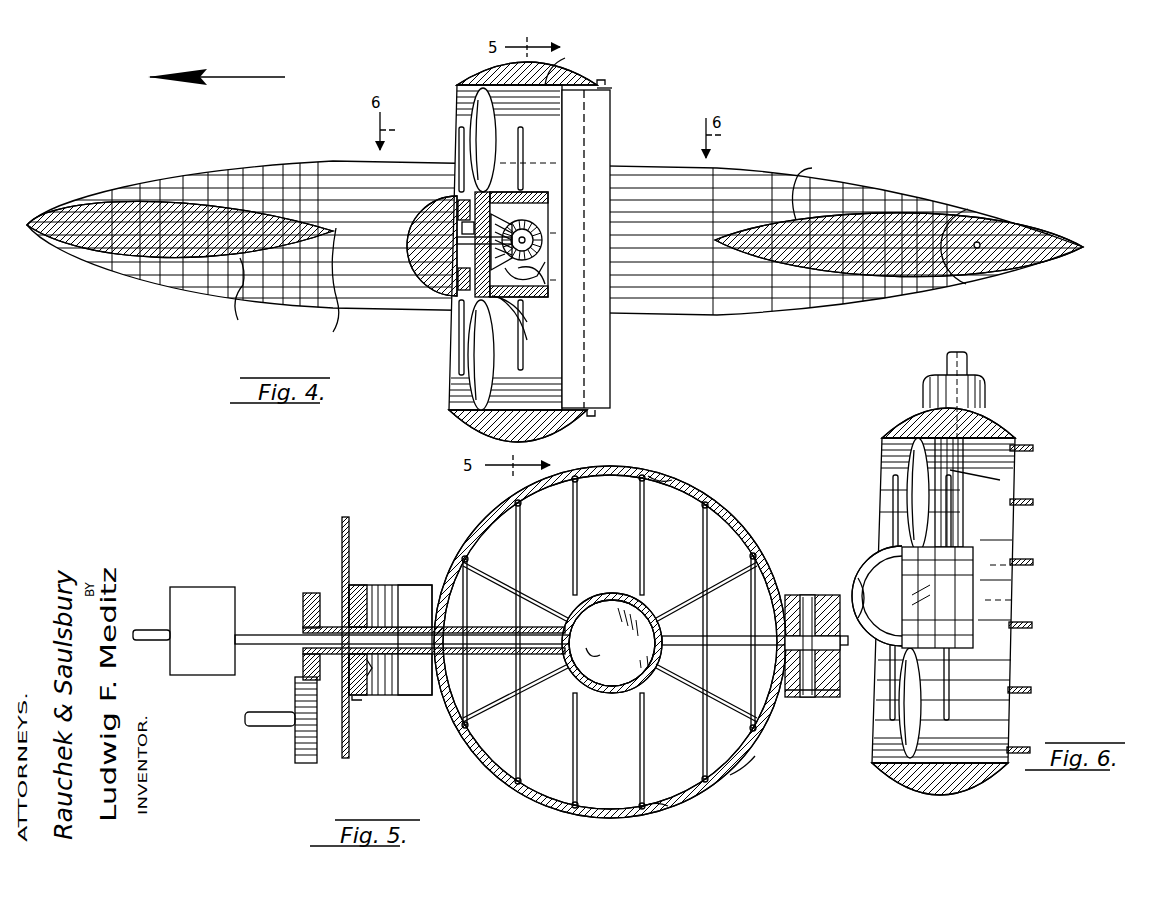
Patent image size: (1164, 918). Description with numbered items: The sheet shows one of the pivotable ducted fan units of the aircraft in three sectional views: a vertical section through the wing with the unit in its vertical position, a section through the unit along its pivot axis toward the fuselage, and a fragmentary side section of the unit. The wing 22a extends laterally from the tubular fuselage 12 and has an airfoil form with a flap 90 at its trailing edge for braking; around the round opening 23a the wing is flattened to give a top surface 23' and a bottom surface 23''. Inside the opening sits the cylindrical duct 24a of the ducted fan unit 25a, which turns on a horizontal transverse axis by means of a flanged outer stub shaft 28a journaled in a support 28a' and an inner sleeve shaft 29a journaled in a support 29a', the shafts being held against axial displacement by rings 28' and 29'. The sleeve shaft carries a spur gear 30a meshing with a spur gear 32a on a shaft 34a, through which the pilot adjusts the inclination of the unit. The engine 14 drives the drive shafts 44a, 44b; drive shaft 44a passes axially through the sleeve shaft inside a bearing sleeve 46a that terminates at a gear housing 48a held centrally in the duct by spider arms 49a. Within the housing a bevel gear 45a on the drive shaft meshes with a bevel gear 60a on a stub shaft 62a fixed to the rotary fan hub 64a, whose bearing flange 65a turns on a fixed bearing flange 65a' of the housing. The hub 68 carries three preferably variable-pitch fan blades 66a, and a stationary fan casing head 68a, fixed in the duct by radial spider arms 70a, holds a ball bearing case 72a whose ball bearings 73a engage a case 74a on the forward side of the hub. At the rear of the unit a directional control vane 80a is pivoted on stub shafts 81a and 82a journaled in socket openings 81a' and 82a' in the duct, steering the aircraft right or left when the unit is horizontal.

In FIG. 5, the fuselage 12 is at (352, 528).
In FIG. 5, the engine 14 is at (200, 675).
In FIG. 4, the wing 22a is at (243, 168).
In FIG. 5, the wing 22a is at (418, 585).
In FIG. 4, the top surface 23' is at (814, 184).
In FIG. 4, the bottom surface 23'' is at (180, 274).
In FIG. 4, the opening 23a is at (349, 285).
In FIG. 4, the duct 24a is at (598, 74).
In FIG. 5, the duct 24a is at (742, 776).
In FIG. 6, the duct 24a is at (884, 754).
In FIG. 4, the ducted fan unit 25a is at (446, 398).
In FIG. 5, the ducted fan unit 25a is at (542, 810).
In FIG. 6, the ducted fan unit 25a is at (1016, 536).
In FIG. 5, the outer stub shaft 28a is at (812, 625).
In FIG. 5, the ring 28' is at (795, 663).
In FIG. 5, the support 28a' is at (812, 735).
In FIG. 5, the inner sleeve shaft 29a is at (390, 621).
In FIG. 6, the inner sleeve shaft 29a is at (925, 391).
In FIG. 5, the ring 29' is at (386, 690).
In FIG. 5, the support 29a' is at (378, 724).
In FIG. 5, the spur gear 30a is at (313, 593).
In FIG. 5, the spur gear 32a is at (305, 764).
In FIG. 5, the shaft 34a is at (270, 727).
In FIG. 4, the drive shaft 44a is at (540, 240).
In FIG. 5, the drive shaft 44a is at (506, 634).
In FIG. 6, the drive shaft 44a is at (947, 364).
In FIG. 5, the drive shaft 44b is at (135, 630).
In FIG. 4, the bevel gear 45a is at (538, 276).
In FIG. 5, the bevel gear 45a is at (600, 656).
In FIG. 4, the bearing sleeve 46a is at (484, 240).
In FIG. 5, the bearing sleeve 46a is at (494, 655).
In FIG. 6, the bearing sleeve 46a is at (946, 452).
In FIG. 4, the gear housing 48a is at (546, 196).
In FIG. 5, the gear housing 48a is at (618, 594).
In FIG. 4, the spider arm 49a is at (567, 66).
In FIG. 5, the spider arm 49a is at (712, 573).
In FIG. 6, the spider arm 49a is at (1000, 480).
In FIG. 4, the bevel gear 60a is at (546, 284).
In FIG. 4, the stub shaft 62a is at (492, 250).
In FIG. 4, the fan hub 64a is at (474, 240).
In FIG. 6, the fan hub 64a is at (920, 576).
In FIG. 4, the bearing flange 65a is at (526, 324).
In FIG. 4, the fixed bearing flange 65a' is at (523, 313).
In FIG. 4, the fan blade 66a is at (472, 122).
In FIG. 6, the fan blade 66a is at (910, 478).
In FIG. 6, the hub 68 is at (882, 602).
In FIG. 4, the fan casing head 68a is at (430, 226).
In FIG. 4, the spider arm 70a is at (458, 144).
In FIG. 6, the spider arm 70a is at (892, 502).
In FIG. 4, the ball bearing case 72a is at (460, 280).
In FIG. 4, the ball bearing 73a is at (460, 206).
In FIG. 4, the case 74a is at (464, 224).
In FIG. 4, the directional control vane 80a is at (600, 120).
In FIG. 5, the directional control vane 80a is at (582, 796).
In FIG. 6, the directional control vane 80a is at (1012, 613).
In FIG. 4, the stub shaft 81a is at (654, 60).
In FIG. 5, the stub shaft 81a is at (704, 470).
In FIG. 4, the socket opening 81a' is at (653, 76).
In FIG. 4, the stub shaft 82a is at (544, 426).
In FIG. 5, the stub shaft 82a is at (674, 816).
In FIG. 4, the socket opening 82a' is at (622, 409).
In FIG. 4, the flap 90 is at (1010, 233).